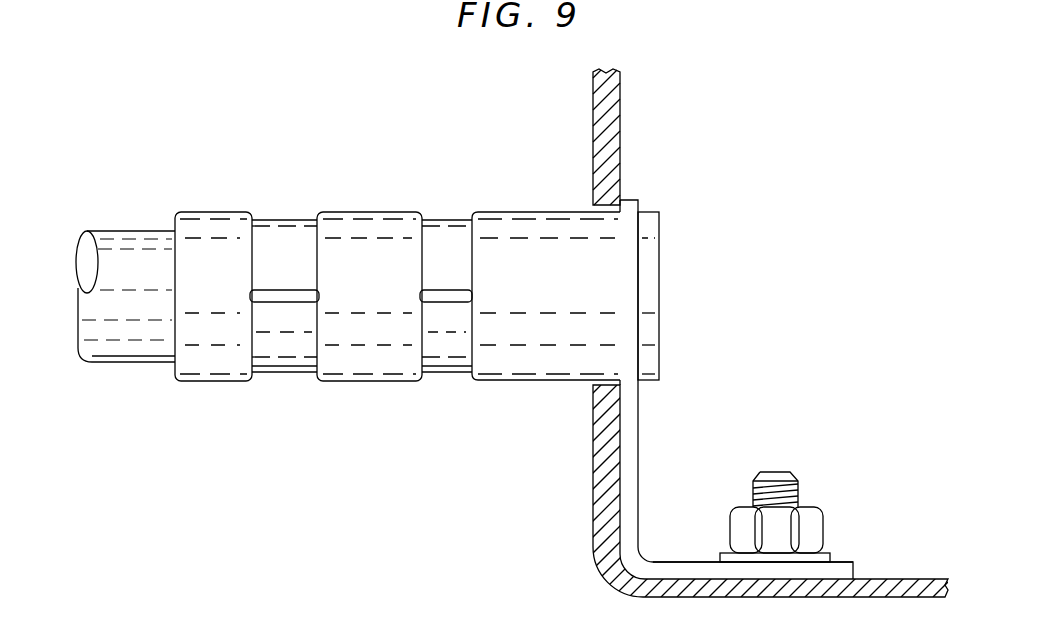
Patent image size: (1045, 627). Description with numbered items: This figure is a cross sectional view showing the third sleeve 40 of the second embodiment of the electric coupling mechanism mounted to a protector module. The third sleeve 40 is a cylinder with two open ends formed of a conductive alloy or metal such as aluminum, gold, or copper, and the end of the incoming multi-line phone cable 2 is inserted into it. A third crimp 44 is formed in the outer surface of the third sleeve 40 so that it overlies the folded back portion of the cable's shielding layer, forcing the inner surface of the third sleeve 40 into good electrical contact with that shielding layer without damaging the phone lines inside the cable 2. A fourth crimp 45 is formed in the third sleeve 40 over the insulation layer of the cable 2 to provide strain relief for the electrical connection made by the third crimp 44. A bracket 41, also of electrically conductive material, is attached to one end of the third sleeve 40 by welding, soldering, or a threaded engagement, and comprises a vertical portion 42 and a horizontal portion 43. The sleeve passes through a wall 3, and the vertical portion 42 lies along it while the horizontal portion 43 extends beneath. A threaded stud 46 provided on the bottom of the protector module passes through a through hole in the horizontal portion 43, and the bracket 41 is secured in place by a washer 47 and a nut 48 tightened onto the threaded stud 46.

The incoming multi-line phone cable 2 is at (130, 231).
The wall 3 is at (620, 118).
The third sleeve 40 is at (545, 212).
The bracket 41 is at (772, 389).
The vertical portion 42 is at (638, 407).
The horizontal portion 43 is at (855, 563).
The third crimp 44 is at (442, 372).
The fourth crimp 45 is at (283, 372).
The threaded stud 46 is at (775, 472).
The washer 47 is at (720, 553).
The nut 48 is at (736, 507).